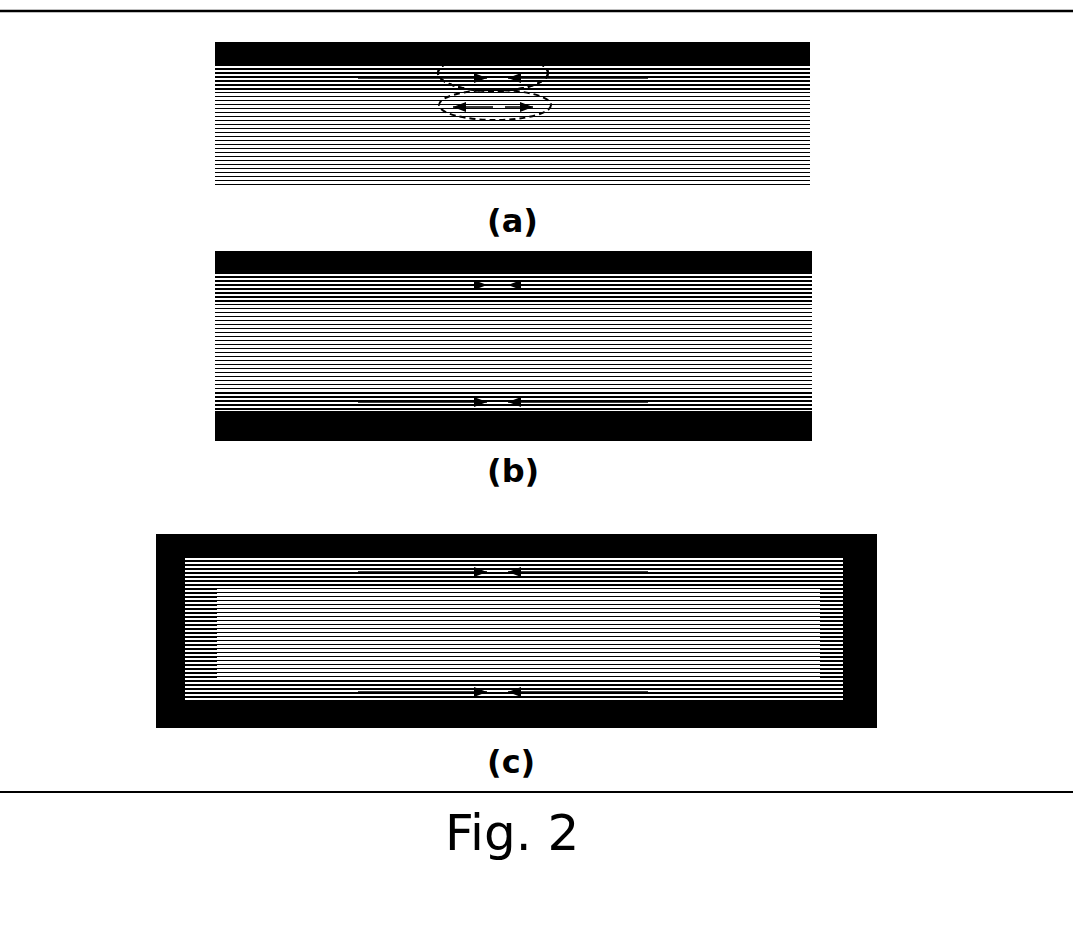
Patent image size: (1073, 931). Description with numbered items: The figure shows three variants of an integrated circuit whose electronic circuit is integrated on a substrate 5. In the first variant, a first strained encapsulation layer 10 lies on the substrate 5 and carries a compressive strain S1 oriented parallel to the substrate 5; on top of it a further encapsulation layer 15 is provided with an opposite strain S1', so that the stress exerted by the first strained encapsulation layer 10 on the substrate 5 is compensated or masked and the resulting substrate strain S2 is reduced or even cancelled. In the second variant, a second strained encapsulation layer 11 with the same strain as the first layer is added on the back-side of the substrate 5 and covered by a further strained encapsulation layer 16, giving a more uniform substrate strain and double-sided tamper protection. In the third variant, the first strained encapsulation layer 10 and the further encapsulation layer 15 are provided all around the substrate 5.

The substrate 5 is at (201, 98).
The first strained encapsulation layer 10 is at (232, 77).
The second strained encapsulation layer 11 is at (248, 402).
The further encapsulation layer 15 is at (795, 47).
The further strained encapsulation layer 16 is at (800, 420).
The strain of the first strained encapsulation layer S1 is at (504, 54).
The opposite strain S1' is at (462, 54).
The substrate strain S2 is at (552, 107).